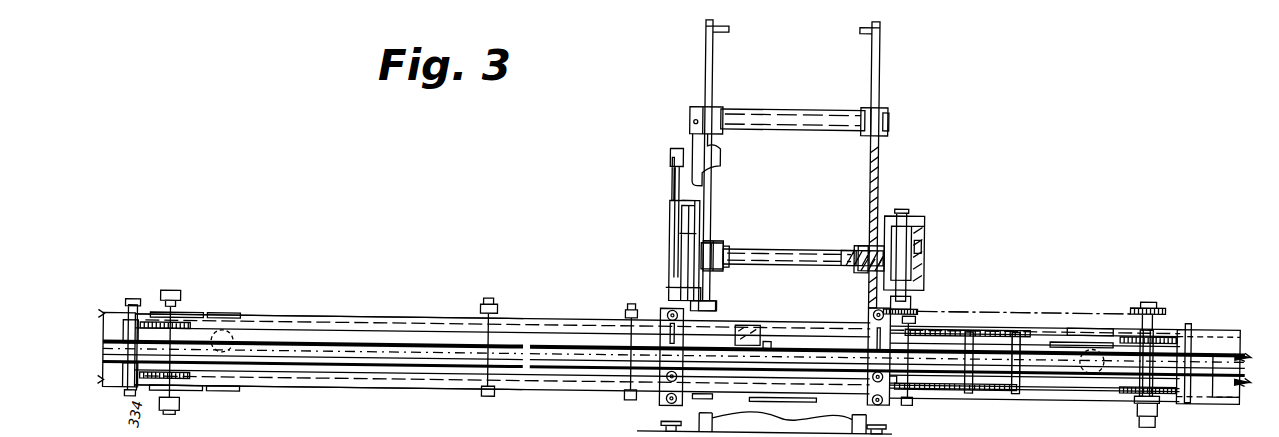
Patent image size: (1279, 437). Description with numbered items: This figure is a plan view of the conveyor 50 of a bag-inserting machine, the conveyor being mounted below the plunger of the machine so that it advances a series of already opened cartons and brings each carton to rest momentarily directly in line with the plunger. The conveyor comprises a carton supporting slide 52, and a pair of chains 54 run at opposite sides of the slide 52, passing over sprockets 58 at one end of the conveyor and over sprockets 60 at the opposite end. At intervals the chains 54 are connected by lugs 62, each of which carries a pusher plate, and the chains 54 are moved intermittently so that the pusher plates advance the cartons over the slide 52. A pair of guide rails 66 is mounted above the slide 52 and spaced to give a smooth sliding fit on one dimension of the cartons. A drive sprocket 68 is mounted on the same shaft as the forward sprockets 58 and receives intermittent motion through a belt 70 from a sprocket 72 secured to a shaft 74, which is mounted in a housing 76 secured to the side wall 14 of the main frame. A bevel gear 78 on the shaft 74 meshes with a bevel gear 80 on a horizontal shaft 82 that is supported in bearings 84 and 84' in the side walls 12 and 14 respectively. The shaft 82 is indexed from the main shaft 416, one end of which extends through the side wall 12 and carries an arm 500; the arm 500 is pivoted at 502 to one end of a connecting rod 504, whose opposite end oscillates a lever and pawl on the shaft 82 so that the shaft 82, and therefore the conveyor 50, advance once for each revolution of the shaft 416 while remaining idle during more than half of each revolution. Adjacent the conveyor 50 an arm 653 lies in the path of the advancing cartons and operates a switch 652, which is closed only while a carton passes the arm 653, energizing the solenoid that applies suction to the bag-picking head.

The side wall 12 is at (702, 60).
The side wall 14 is at (868, 78).
The shaft 416 is at (786, 113).
The arm 500 is at (690, 133).
The pivot 502 is at (669, 158).
The connecting rod 504 is at (680, 222).
The horizontal shaft 82 is at (780, 257).
The bearing 84 is at (725, 244).
The bearing 84' is at (852, 276).
The bevel gear 80 is at (870, 242).
The housing 76 is at (918, 224).
The bevel gear 78 is at (925, 246).
The shaft 74 is at (905, 262).
The sprocket 72 is at (917, 308).
The switch 652 is at (748, 323).
The arm 653 is at (769, 342).
The sprockets 60 is at (185, 322).
The carton supporting slide 52 is at (338, 346).
The conveyor 50 is at (398, 318).
The guide rails 66 is at (551, 358).
The chains 54 is at (1002, 328).
The belt 70 is at (1075, 312).
The lugs 62 is at (1020, 376).
The drive sprocket 68 is at (1160, 306).
The sprockets 58 is at (1175, 334).